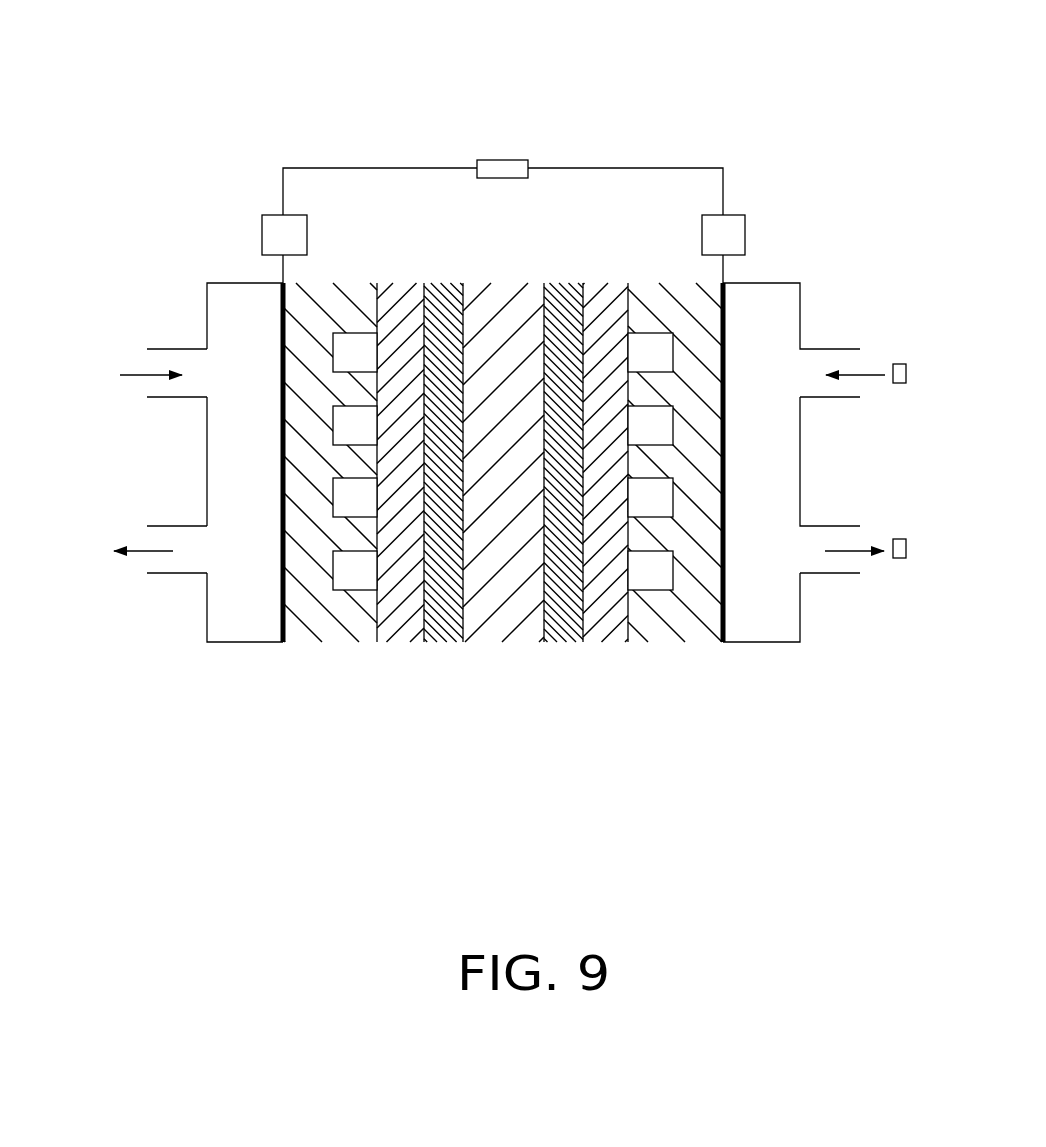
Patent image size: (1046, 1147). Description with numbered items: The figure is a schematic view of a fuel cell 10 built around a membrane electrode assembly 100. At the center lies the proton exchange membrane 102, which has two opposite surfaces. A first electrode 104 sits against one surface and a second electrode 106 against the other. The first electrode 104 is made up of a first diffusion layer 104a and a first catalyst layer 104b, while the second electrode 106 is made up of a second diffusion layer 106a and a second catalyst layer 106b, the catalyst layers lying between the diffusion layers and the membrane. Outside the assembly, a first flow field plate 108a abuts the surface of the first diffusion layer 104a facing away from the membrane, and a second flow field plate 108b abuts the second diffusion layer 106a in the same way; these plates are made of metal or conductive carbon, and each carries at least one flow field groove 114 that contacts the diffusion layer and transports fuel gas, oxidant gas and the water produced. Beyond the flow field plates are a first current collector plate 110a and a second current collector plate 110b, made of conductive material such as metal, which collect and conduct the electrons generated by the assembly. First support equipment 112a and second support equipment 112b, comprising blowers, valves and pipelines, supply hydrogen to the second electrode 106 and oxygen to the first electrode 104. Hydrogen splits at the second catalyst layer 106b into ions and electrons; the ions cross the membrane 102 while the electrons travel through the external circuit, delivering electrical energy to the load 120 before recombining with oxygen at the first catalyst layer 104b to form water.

The fuel cell 10 is at (450, 68).
The membrane electrode assembly 100 is at (517, 538).
The proton exchange membrane 102 is at (497, 633).
The first electrode 104 is at (599, 514).
The first diffusion layer 104a is at (617, 628).
The first catalyst layer 104b is at (554, 628).
The second electrode 106 is at (436, 514).
The second diffusion layer 106a is at (400, 628).
The second catalyst layer 106b is at (441, 628).
The first flow field plate 108a is at (703, 643).
The second flow field plate 108b is at (315, 643).
The first current collector plate 110a is at (725, 328).
The second current collector plate 110b is at (283, 328).
The first support equipment 112a is at (782, 643).
The second support equipment 112b is at (235, 643).
The flow field groove 114 is at (352, 347).
The load 120 is at (512, 168).